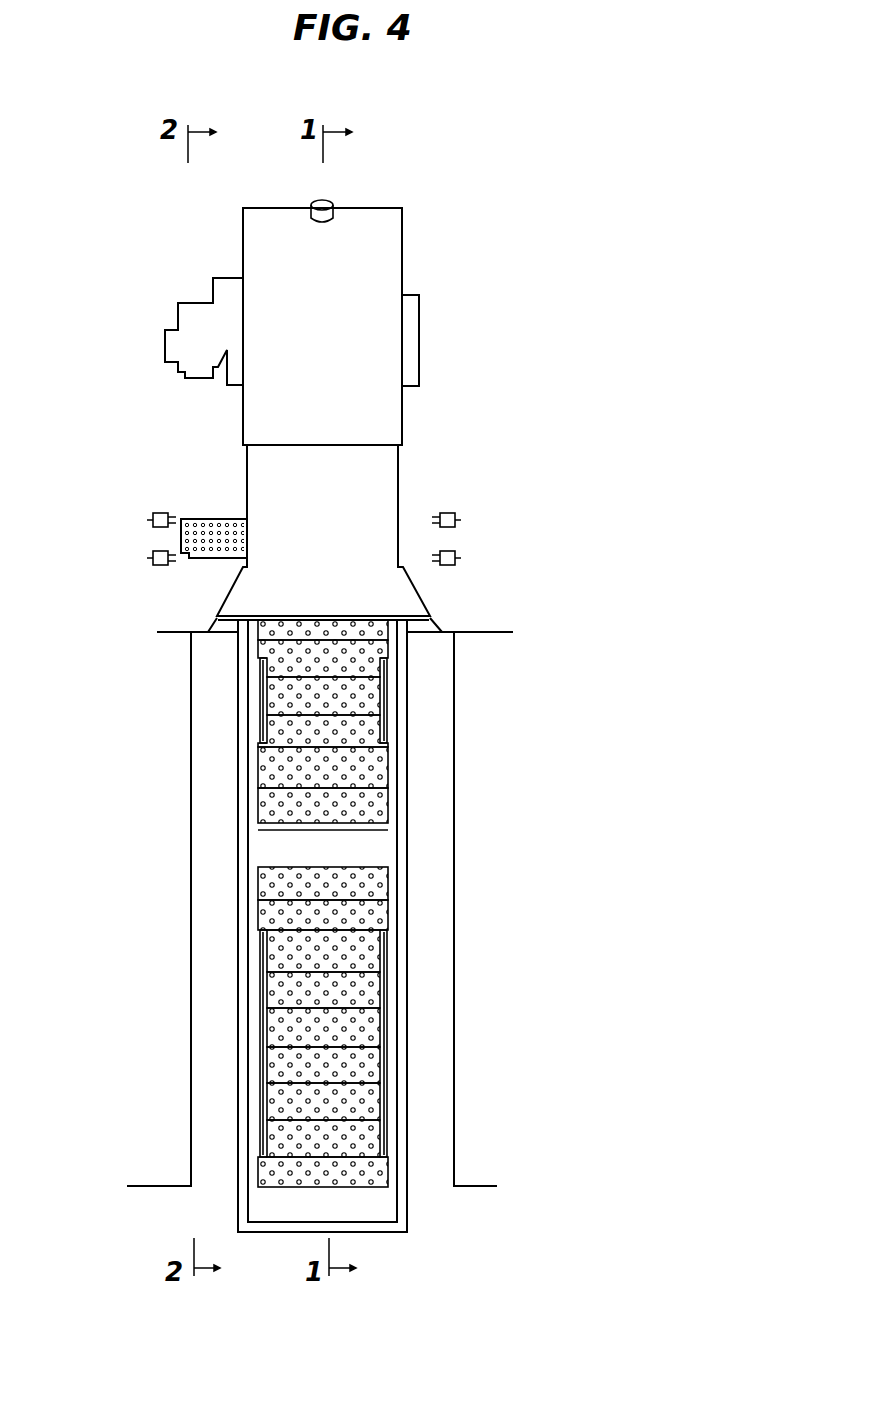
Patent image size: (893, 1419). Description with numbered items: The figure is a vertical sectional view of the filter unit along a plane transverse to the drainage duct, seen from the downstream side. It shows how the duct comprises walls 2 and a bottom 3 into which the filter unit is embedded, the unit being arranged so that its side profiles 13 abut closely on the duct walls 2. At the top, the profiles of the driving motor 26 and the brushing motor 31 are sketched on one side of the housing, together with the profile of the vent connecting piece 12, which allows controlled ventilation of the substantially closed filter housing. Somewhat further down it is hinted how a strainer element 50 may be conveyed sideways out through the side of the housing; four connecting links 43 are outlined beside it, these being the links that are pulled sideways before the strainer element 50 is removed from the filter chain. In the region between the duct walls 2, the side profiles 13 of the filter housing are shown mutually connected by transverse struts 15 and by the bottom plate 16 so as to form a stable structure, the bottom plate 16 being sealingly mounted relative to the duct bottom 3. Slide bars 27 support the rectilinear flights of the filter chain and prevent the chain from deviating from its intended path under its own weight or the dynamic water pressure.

The duct walls 2 is at (238, 925).
The duct bottom 3 is at (367, 1232).
The vent connecting piece 12 is at (331, 205).
The side profiles 13 is at (255, 808).
The transverse struts 15 is at (285, 847).
The bottom plate 16 is at (280, 1208).
The driving motor 26 is at (190, 303).
The slide bars 27 is at (262, 699).
The brushing motor 31 is at (185, 378).
The connecting links 43 is at (147, 558).
The strainer element 50 is at (215, 519).